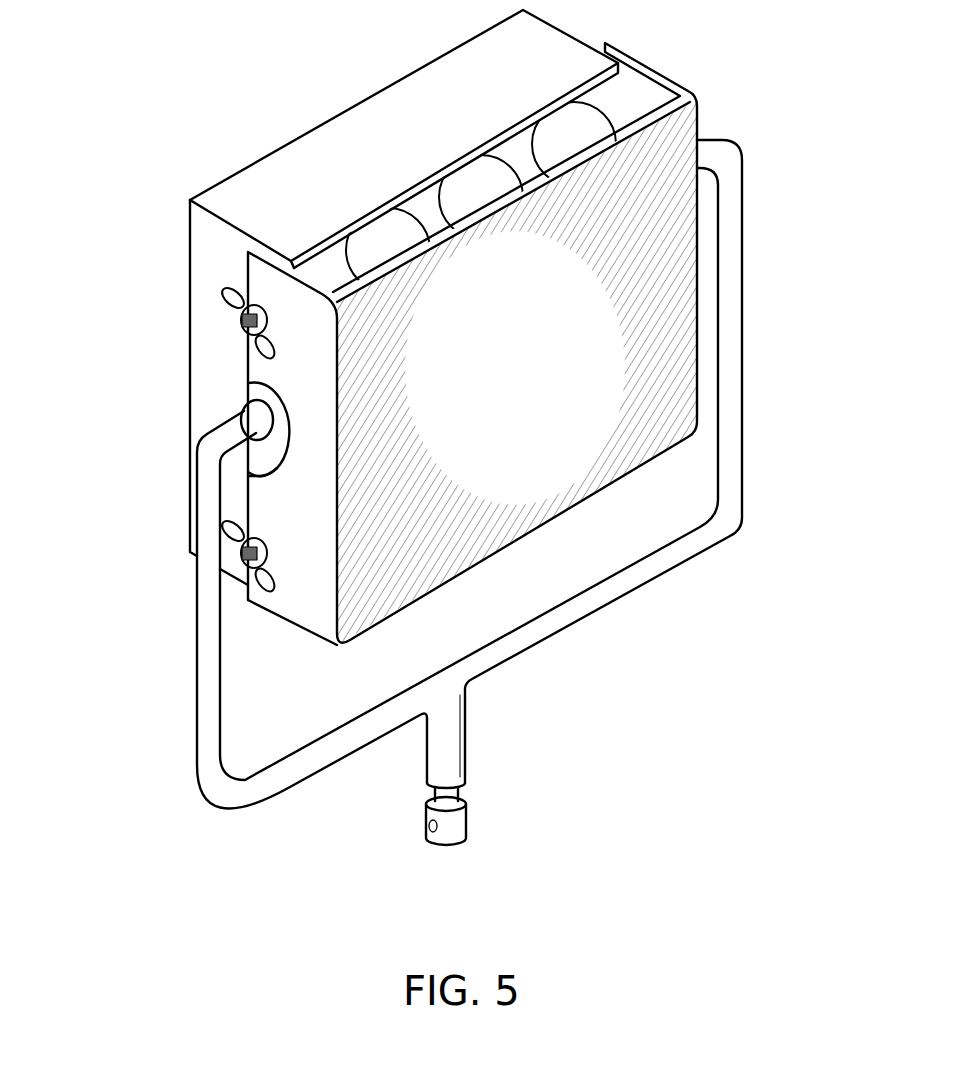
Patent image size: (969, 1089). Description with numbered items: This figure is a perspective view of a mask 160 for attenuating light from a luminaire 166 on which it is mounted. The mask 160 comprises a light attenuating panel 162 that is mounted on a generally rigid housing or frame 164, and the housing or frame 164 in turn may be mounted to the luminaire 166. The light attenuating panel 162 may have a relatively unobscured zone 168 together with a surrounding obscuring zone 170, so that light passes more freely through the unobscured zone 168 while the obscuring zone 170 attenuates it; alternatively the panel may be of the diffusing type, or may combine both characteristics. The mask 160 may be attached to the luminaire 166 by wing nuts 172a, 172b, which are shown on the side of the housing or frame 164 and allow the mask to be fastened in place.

The mask 160 is at (770, 209).
The light attenuating panel 162 is at (697, 318).
The housing or frame 164 is at (190, 273).
The luminaire 166 is at (240, 172).
The unobscured zone 168 is at (537, 383).
The obscuring zone 170 is at (667, 140).
The wing nut 172a is at (244, 325).
The wing nut 172b is at (244, 557).